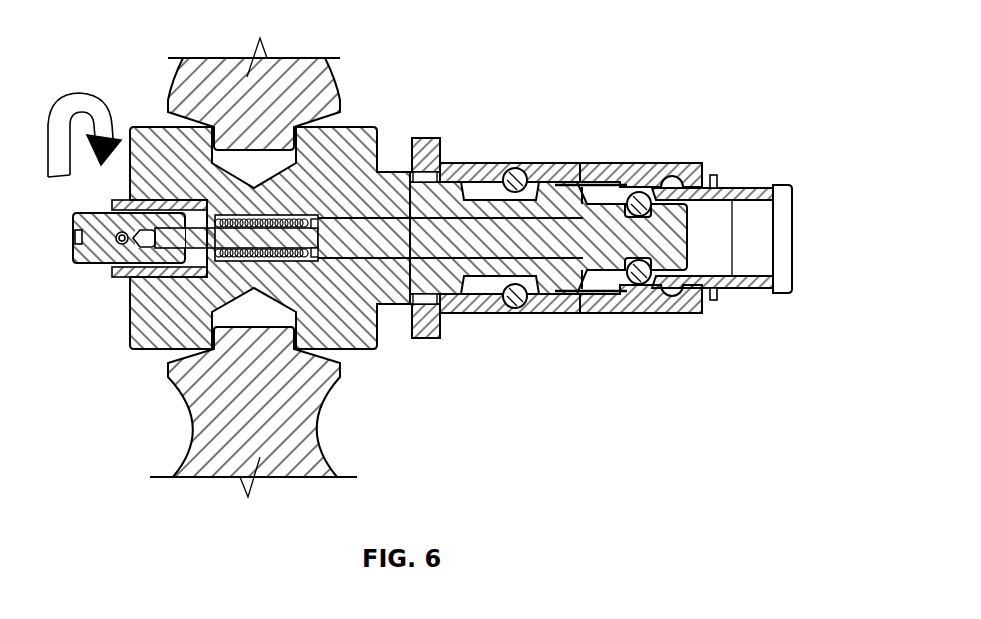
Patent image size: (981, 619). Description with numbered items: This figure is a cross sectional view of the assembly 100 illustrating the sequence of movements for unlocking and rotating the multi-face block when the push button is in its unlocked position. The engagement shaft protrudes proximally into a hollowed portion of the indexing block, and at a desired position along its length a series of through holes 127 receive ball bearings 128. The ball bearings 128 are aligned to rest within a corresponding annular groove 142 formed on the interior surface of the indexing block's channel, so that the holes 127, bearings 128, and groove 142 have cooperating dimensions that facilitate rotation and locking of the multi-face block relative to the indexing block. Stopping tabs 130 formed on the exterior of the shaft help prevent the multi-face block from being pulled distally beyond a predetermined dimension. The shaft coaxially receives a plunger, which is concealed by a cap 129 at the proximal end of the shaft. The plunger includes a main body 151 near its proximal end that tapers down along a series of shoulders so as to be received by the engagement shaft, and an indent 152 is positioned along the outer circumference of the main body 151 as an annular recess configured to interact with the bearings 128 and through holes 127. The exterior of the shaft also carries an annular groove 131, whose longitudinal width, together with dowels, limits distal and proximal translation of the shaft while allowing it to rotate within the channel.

The connector assembly 100 is at (768, 50).
The through holes 127 is at (650, 188).
The ball bearings 128 is at (640, 286).
The cap 129 is at (790, 214).
The stopping tabs 130 is at (720, 297).
The annular groove 131 is at (488, 290).
The annular groove 142 is at (670, 295).
The main body 151 is at (570, 190).
The indent 152 is at (600, 288).